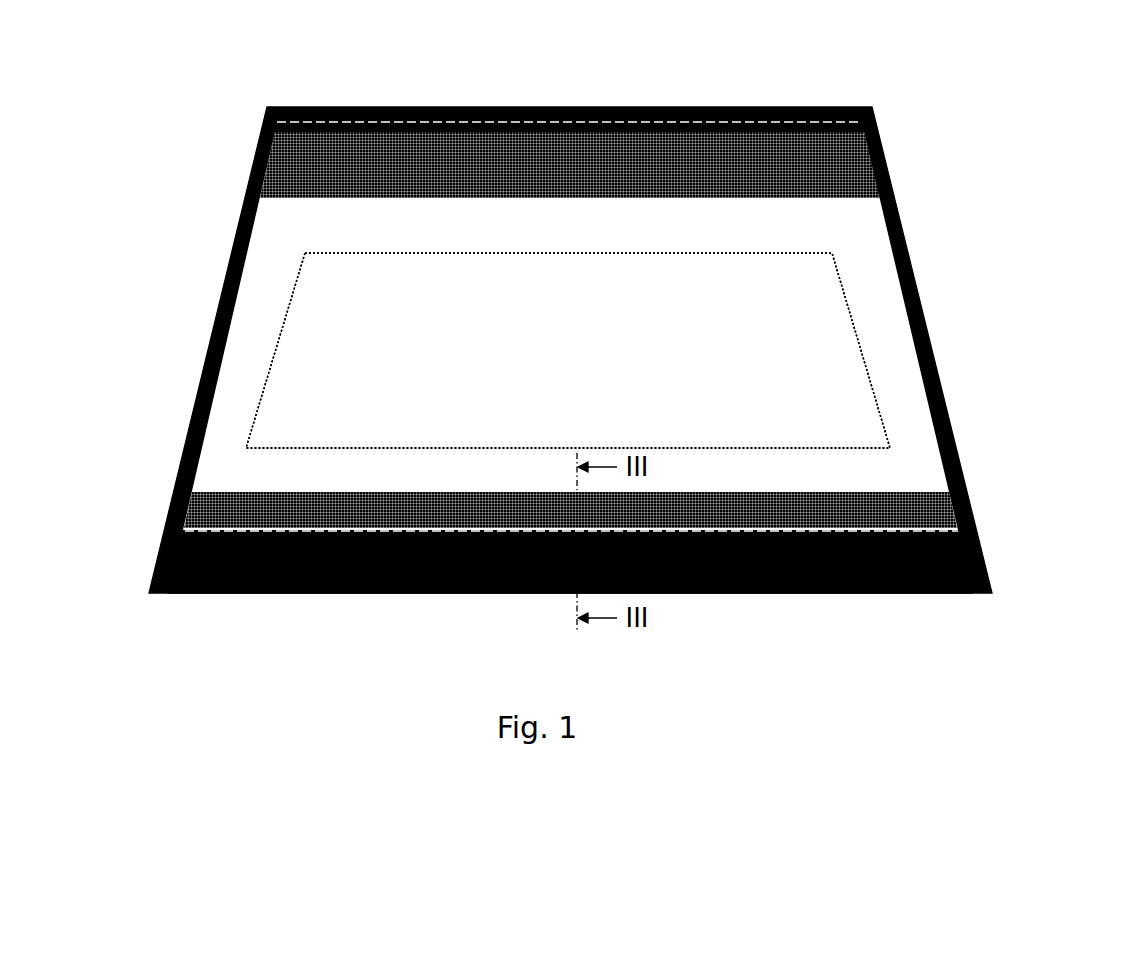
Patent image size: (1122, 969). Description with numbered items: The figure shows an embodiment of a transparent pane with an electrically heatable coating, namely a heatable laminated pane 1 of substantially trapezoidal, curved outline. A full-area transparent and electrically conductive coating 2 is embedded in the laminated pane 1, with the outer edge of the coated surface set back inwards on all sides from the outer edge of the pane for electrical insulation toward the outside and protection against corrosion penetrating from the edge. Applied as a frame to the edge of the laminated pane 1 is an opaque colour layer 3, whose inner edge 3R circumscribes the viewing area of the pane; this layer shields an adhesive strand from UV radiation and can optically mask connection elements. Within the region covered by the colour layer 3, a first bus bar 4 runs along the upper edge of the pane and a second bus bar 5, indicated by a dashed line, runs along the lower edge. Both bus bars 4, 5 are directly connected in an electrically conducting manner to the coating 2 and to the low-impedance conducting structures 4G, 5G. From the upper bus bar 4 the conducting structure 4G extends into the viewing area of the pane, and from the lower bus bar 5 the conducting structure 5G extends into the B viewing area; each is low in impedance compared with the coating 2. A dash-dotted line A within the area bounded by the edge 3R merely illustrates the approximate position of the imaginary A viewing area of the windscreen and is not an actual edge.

The laminated pane 1 is at (910, 217).
The electrically conductive coating 2 is at (570, 331).
The opaque colour layer 3 is at (987, 567).
The inner edge of the colour layer 3R is at (892, 265).
The first bus bar 4 is at (383, 118).
The conducting structure 4G is at (847, 163).
The second bus bar 5 is at (793, 533).
The conducting structure 5G is at (967, 487).
The line A is at (370, 452).